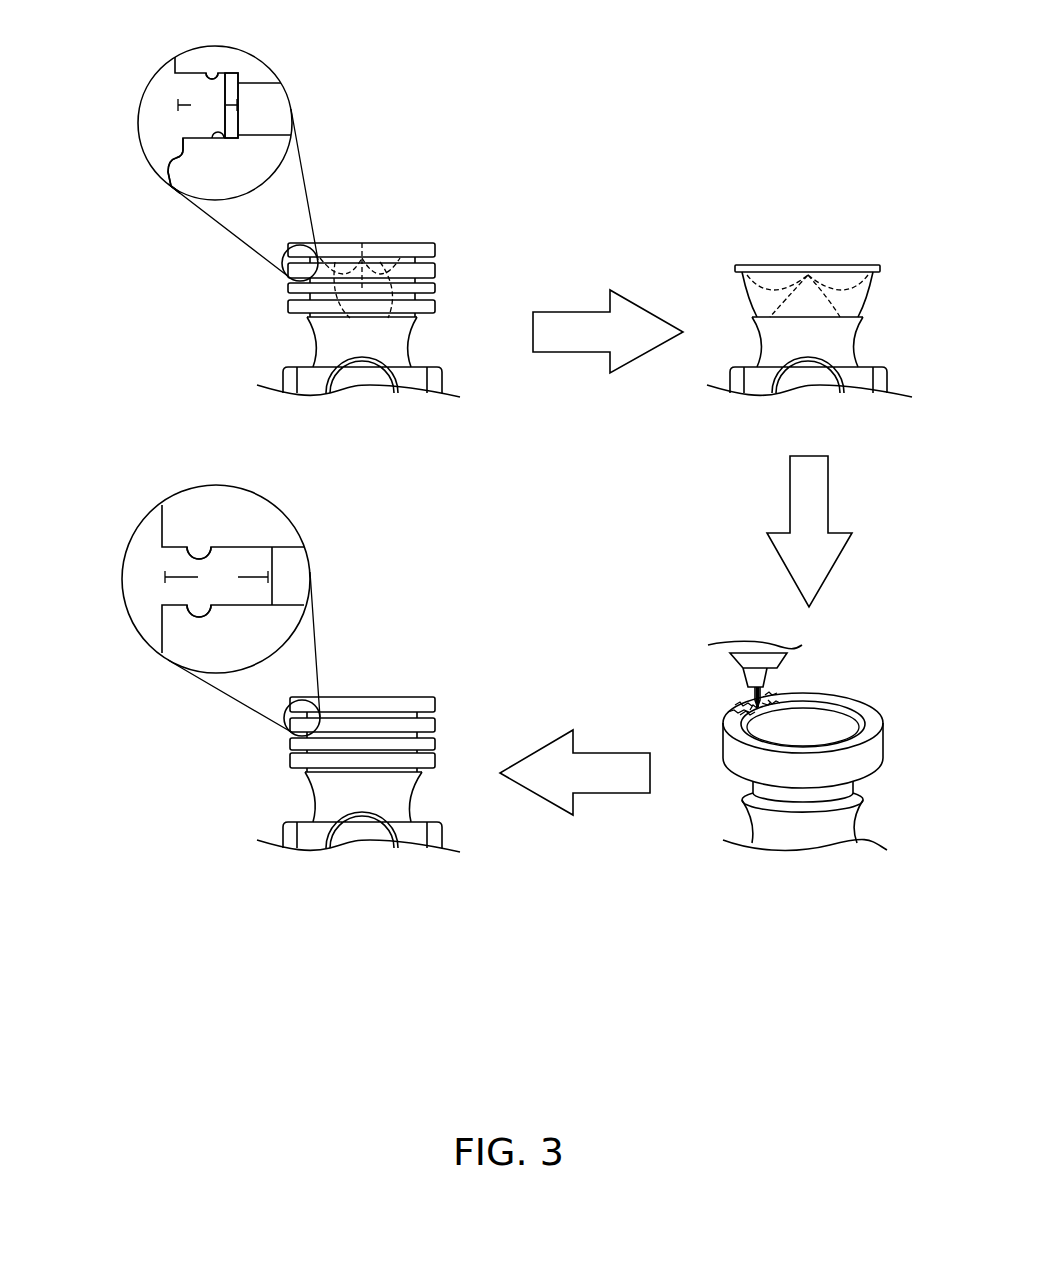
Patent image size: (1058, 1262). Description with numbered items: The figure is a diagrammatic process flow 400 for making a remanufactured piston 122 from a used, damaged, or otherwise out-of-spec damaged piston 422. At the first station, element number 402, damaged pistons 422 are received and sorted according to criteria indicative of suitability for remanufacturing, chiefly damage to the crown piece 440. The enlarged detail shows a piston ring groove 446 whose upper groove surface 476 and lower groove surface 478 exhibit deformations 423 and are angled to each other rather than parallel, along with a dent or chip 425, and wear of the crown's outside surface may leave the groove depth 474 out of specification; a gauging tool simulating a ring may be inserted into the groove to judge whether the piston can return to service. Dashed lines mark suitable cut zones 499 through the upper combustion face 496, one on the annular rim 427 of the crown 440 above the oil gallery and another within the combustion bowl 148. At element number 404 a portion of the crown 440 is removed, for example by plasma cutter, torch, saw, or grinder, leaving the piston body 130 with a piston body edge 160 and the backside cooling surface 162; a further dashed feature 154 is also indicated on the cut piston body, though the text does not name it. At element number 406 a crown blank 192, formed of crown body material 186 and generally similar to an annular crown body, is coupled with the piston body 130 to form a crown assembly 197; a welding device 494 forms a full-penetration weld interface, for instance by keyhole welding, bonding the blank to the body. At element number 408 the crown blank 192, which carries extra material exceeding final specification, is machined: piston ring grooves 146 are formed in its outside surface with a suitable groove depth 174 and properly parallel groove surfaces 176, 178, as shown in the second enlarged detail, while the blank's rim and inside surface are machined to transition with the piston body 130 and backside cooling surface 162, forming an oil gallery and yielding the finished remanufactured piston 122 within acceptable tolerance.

The diagrammatic process flow 400 is at (83, 84).
The receiving and sorting step 402 is at (417, 170).
The piston body edge forming step 404 is at (862, 212).
The crown blank coupling step 406 is at (858, 657).
The machining step 408 is at (417, 675).
The piston ring groove 446 is at (158, 118).
The upper groove surface 476 is at (217, 70).
The lower groove surface 478 is at (210, 140).
The groove depth 474 is at (207, 104).
The deformations 423 is at (228, 78).
The dent or chip 425 is at (168, 150).
The upper combustion face 496 is at (328, 237).
The suitable cut zones 499 is at (308, 235).
The crown piece 440 is at (362, 248).
The annular rim 427 is at (425, 245).
The combustion bowl 148 is at (385, 268).
The damaged piston 422 is at (420, 325).
The piston body 130 is at (328, 342).
The gallery passage 154 is at (857, 273).
The piston body edge 160 is at (882, 267).
The backside cooling surface 162 is at (868, 293).
The piston ring grooves 146 is at (152, 552).
The groove surface 176 is at (210, 552).
The groove surface 178 is at (207, 597).
The groove depth 174 is at (216, 576).
The remanufactured piston 122 is at (422, 783).
The welding device 494 is at (733, 657).
The crown assembly 197 is at (860, 692).
The crown blank 192 is at (873, 748).
The crown body material 186 is at (742, 755).